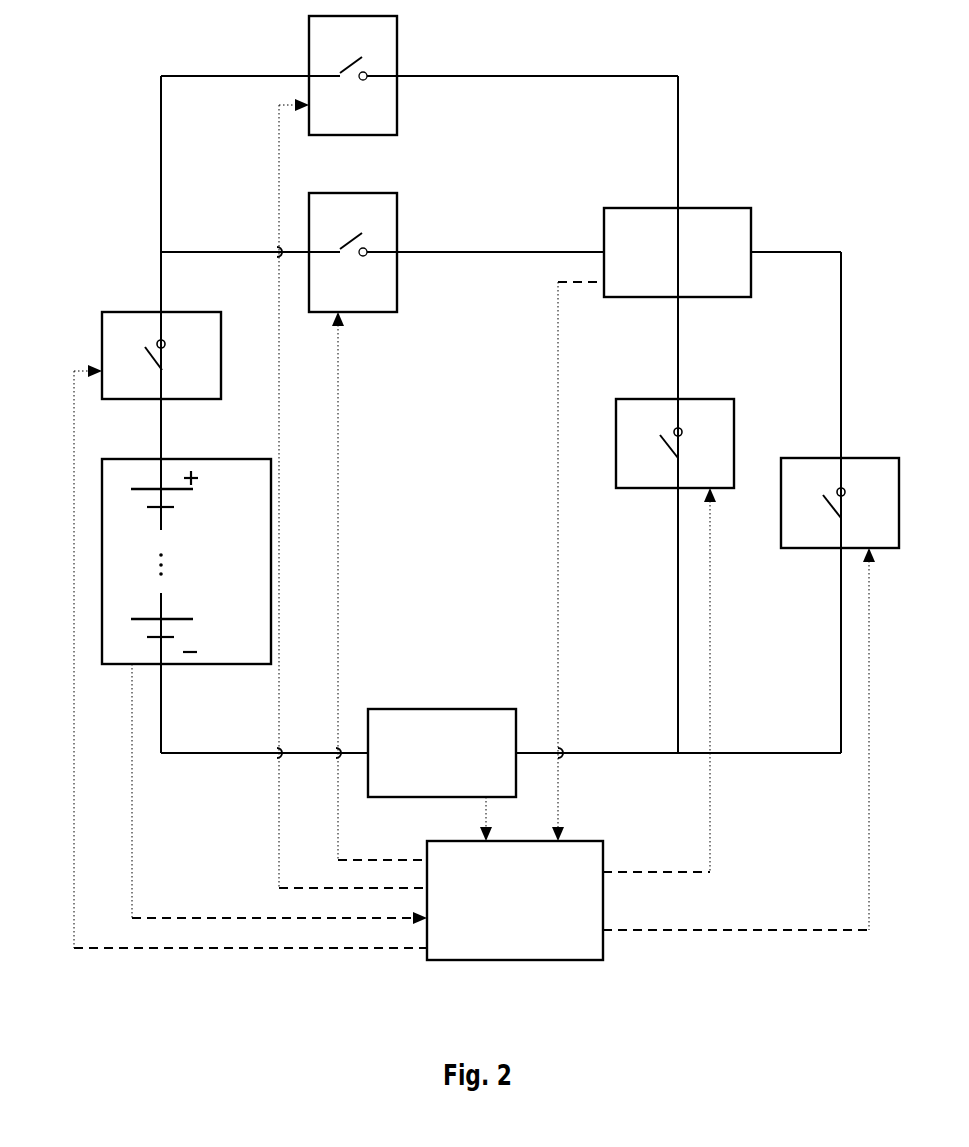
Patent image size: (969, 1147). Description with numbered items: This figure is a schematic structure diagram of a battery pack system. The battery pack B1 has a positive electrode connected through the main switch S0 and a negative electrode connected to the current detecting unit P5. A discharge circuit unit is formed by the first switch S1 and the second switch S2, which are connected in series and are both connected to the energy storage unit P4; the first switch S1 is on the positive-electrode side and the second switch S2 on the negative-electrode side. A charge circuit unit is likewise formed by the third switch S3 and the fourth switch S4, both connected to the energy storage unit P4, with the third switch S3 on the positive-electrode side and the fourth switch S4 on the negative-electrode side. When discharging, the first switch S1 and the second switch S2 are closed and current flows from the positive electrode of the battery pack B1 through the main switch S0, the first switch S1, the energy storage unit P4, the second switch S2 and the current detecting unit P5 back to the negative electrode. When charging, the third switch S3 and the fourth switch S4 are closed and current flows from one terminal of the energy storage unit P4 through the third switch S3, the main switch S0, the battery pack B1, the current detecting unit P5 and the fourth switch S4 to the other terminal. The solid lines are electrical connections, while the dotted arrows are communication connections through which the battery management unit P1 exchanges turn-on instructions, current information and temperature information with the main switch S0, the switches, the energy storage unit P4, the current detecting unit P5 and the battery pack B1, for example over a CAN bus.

The main switch S0 is at (161, 355).
The first switch S1 is at (353, 252).
The second switch S2 is at (675, 443).
The third switch S3 is at (353, 75).
The fourth switch S4 is at (840, 503).
The battery pack B1 is at (186, 561).
The battery management unit P1 is at (515, 900).
The energy storage unit P4 is at (677, 252).
The current detecting unit P5 is at (442, 752).